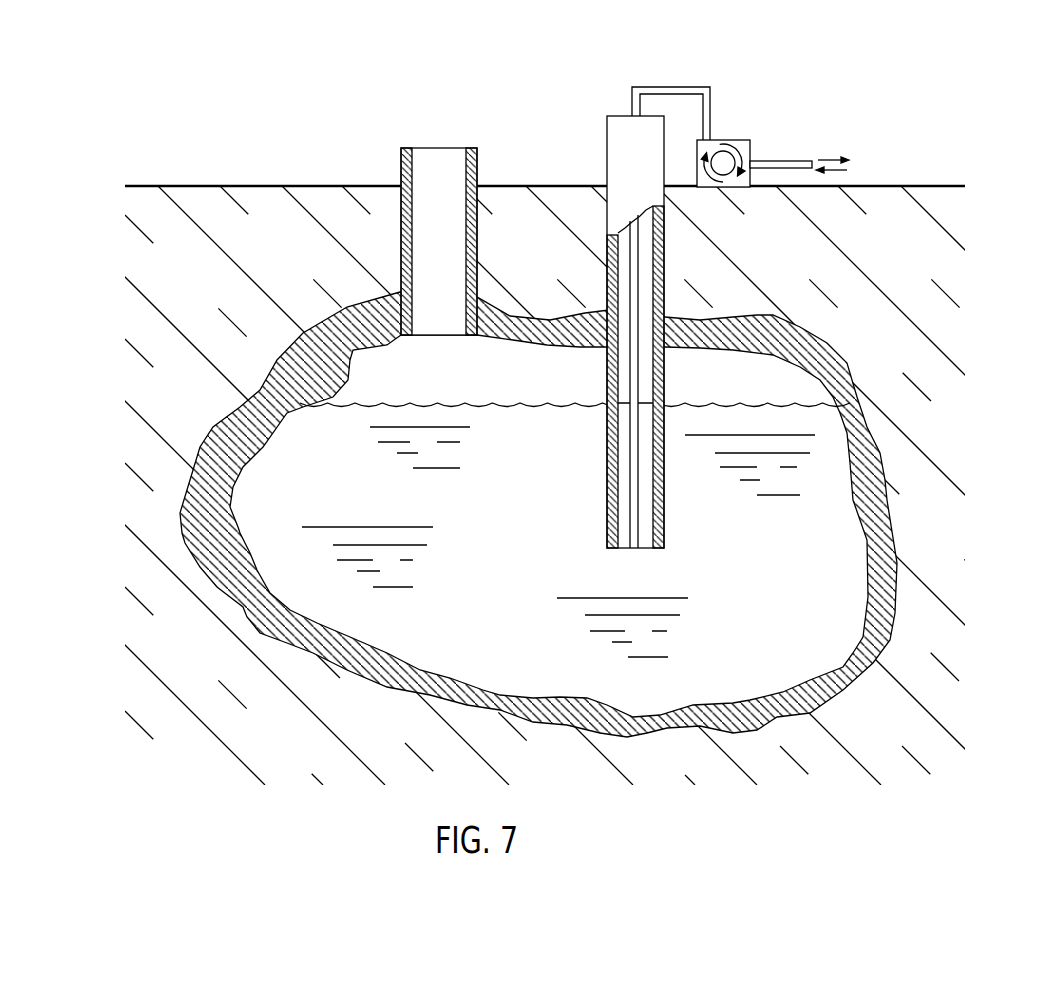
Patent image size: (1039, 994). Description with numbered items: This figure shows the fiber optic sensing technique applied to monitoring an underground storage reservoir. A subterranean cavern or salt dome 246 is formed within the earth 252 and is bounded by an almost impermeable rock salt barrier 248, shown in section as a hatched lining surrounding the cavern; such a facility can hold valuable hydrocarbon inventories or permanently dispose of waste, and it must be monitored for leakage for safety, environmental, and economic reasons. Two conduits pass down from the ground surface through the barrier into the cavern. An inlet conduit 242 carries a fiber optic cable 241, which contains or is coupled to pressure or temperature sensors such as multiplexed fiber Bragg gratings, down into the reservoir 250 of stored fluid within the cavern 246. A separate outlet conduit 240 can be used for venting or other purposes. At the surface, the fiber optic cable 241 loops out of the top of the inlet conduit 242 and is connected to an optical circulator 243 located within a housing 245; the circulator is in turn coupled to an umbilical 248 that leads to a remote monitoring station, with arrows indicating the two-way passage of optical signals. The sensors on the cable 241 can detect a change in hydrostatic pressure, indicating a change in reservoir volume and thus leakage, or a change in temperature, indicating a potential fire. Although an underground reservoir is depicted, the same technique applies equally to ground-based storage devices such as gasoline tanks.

The outlet conduit 240 is at (459, 215).
The fiber optic cable 241 is at (664, 288).
The inlet conduit 242 is at (607, 308).
The optical circulator 243 is at (727, 156).
The housing 245 is at (763, 151).
The subterranean cavern 246 is at (538, 514).
The umbilical 248 is at (802, 161).
The reservoir 250 is at (555, 557).
The earth 252 is at (229, 669).